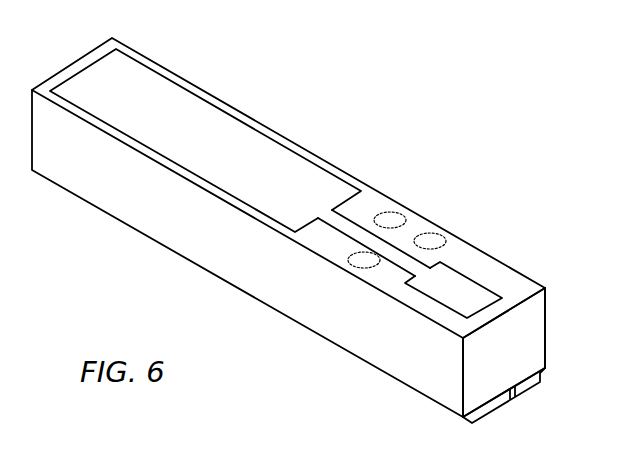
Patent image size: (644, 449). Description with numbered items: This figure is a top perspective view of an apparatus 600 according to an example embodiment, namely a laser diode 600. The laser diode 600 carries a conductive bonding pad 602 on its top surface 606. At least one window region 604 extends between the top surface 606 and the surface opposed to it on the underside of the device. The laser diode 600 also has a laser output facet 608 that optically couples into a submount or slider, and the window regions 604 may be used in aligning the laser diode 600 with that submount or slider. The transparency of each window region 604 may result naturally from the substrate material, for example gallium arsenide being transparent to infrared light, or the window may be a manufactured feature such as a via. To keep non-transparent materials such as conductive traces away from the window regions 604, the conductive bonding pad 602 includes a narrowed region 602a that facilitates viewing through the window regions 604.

The laser diode 600 is at (345, 173).
The conductive bonding pad 602 is at (103, 75).
The narrowed region 602a is at (343, 222).
The window region 604 is at (373, 253).
The top surface 606 is at (517, 298).
The laser output facet 608 is at (515, 397).